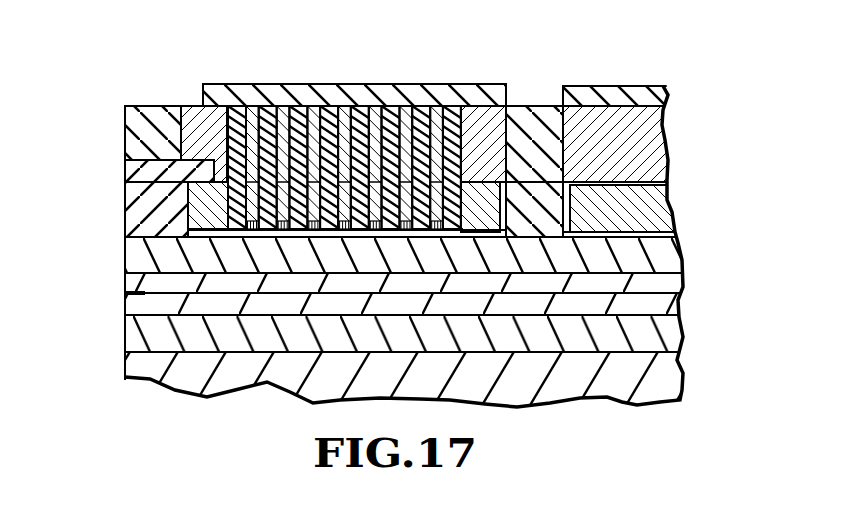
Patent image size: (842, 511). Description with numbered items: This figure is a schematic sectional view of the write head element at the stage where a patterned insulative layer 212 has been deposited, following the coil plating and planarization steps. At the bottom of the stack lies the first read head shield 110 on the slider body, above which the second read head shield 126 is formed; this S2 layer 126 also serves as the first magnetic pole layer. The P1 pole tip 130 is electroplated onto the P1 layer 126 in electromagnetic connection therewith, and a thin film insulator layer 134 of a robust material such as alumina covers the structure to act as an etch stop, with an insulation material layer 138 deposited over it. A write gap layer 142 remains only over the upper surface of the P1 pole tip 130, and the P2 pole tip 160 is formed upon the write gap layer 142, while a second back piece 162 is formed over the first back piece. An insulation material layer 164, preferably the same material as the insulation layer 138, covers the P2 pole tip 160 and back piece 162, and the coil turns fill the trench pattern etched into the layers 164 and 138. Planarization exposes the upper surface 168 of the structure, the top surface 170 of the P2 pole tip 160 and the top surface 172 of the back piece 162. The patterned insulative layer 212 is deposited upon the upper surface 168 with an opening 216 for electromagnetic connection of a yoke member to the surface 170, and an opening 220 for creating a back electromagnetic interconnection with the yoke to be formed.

The first read head shield 110 is at (125, 330).
The second read head shield 126 is at (125, 254).
The P1 pole tip 130 is at (125, 212).
The thin film insulator layer 134 is at (672, 236).
The insulation material layer 138 is at (658, 211).
The write gap layer 142 is at (125, 170).
The P2 pole tip 160 is at (125, 133).
The second back piece 162 is at (515, 111).
The insulation material layer 164 is at (665, 142).
The upper surface 168 is at (326, 98).
The top surface of the P2 pole tip 170 is at (132, 98).
The top surface of the back piece 172 is at (548, 98).
The patterned insulative layer 212 is at (253, 85).
The opening 216 is at (157, 74).
The opening 220 is at (528, 46).